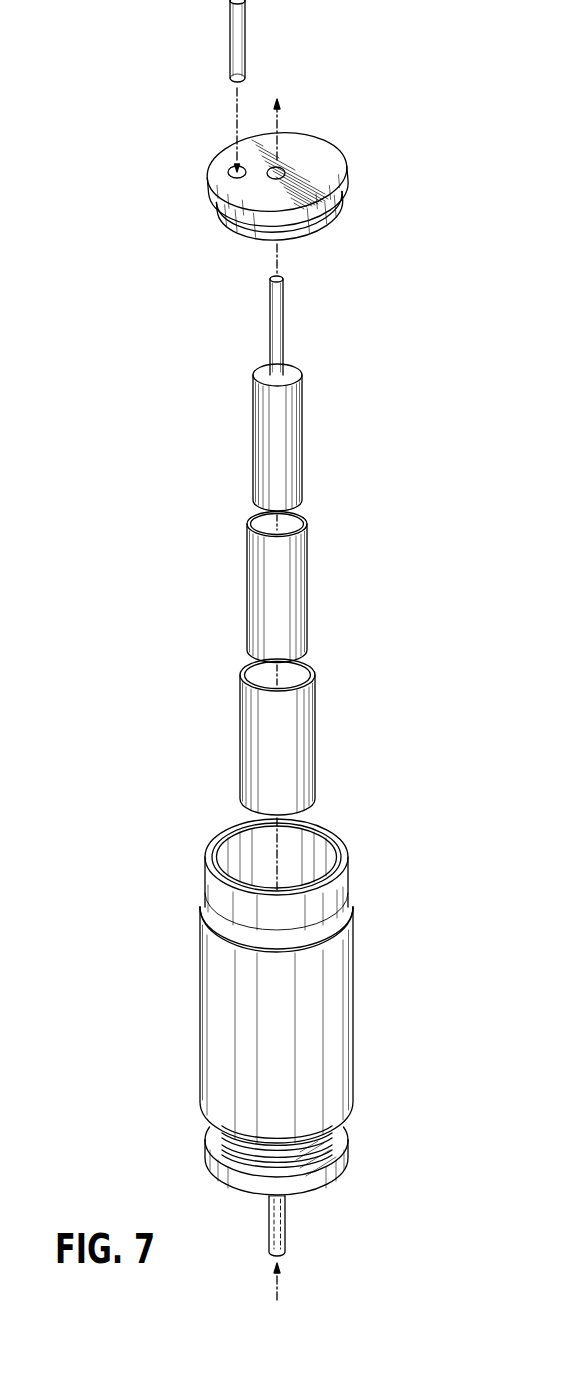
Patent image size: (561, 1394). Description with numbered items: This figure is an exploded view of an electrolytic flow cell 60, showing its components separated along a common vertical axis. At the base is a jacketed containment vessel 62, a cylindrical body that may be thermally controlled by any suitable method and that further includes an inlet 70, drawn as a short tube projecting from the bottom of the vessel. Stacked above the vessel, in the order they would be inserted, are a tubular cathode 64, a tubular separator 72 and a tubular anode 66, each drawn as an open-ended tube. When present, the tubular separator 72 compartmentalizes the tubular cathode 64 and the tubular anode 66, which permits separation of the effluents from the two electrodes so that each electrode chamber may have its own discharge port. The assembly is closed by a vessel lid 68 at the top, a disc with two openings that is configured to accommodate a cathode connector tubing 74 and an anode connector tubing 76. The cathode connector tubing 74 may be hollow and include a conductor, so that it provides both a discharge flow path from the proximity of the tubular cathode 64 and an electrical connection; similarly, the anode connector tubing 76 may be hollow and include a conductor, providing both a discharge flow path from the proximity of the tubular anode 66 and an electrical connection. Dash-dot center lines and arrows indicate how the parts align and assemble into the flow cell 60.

The flow cell 60 is at (107, 53).
The jacketed containment vessel 62 is at (354, 985).
The tubular cathode 64 is at (316, 738).
The tubular anode 66 is at (303, 443).
The vessel lid 68 is at (348, 178).
The inlet 70 is at (269, 1226).
The tubular separator 72 is at (308, 592).
The cathode connector tubing 74 is at (230, 42).
The anode connector tubing 76 is at (270, 314).